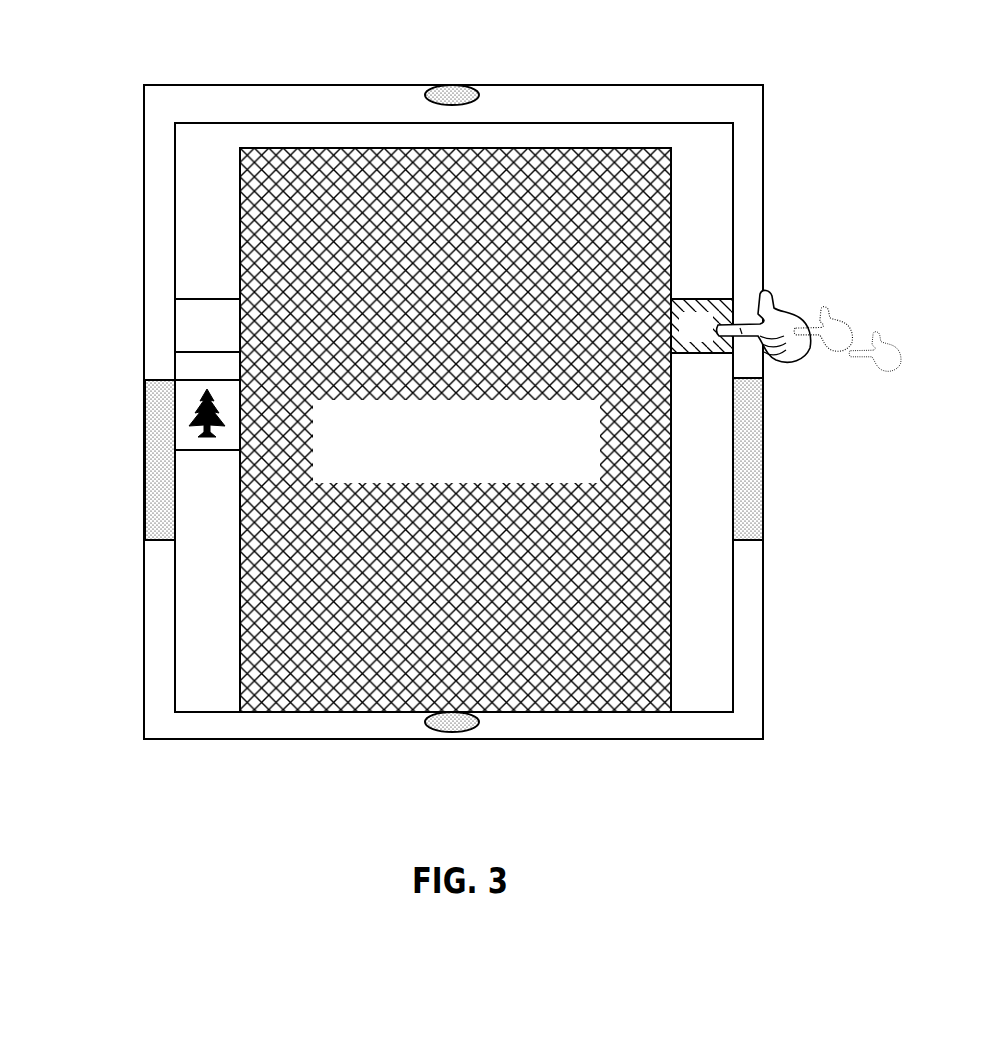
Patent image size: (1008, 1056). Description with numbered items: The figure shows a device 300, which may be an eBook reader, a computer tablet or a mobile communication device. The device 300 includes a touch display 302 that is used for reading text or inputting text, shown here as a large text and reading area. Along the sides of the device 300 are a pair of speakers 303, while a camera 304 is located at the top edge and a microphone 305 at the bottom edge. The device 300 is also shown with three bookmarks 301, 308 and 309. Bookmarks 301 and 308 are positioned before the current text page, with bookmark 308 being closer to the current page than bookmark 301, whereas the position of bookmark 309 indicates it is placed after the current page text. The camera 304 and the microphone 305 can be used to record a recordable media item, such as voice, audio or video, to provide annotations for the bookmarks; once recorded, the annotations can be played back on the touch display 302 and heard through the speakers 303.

The device 300 is at (763, 143).
The bookmark 301 is at (206, 302).
The touch display 302 is at (480, 470).
The speakers 303 is at (150, 458).
The camera 304 is at (443, 85).
The microphone 305 is at (442, 732).
The bookmark 308 is at (190, 383).
The bookmark 309 is at (722, 300).